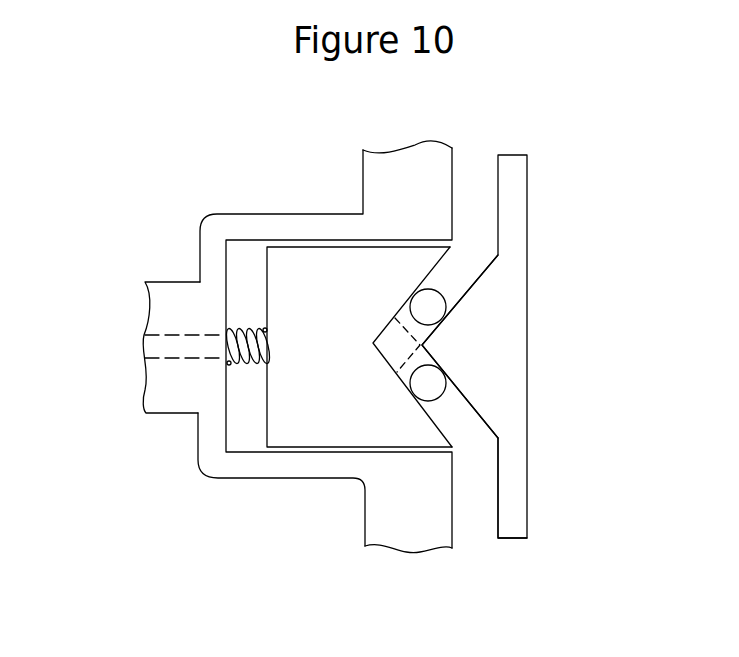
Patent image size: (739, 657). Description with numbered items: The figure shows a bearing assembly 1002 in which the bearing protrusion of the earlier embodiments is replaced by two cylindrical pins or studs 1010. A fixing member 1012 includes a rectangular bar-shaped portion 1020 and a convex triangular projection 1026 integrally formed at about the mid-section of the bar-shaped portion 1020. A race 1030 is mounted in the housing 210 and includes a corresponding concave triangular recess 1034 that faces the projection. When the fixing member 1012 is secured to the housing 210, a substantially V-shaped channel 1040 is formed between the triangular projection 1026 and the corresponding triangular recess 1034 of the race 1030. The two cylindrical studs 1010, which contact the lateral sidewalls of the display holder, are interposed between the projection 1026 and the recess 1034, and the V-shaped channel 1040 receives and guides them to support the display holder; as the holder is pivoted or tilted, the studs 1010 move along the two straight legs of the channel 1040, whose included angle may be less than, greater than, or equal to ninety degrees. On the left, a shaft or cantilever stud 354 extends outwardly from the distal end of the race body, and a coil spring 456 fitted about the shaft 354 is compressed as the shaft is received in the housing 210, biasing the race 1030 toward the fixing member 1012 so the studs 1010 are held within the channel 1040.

The housing 210 is at (277, 222).
The shaft 354 is at (170, 334).
The coil spring 456 is at (248, 365).
The bearing assembly 1002 is at (434, 121).
The cylindrical studs 1010 is at (447, 287).
The fixing member 1012 is at (520, 212).
The bar-shaped portion 1020 is at (518, 507).
The convex triangular projection 1026 is at (455, 350).
The race 1030 is at (305, 435).
The concave triangular recess 1034 is at (395, 337).
The V-shaped channel 1040 is at (461, 430).